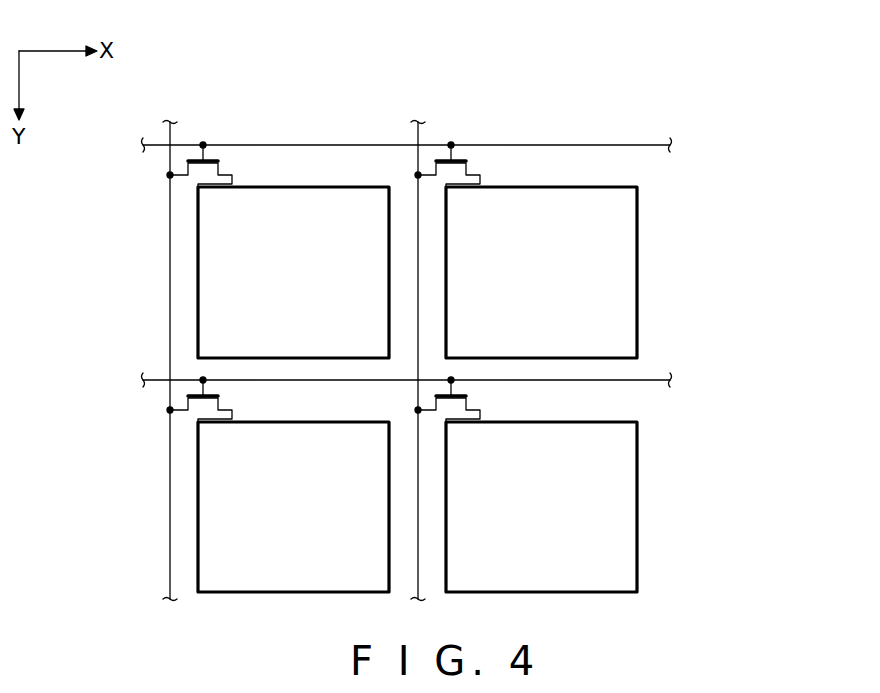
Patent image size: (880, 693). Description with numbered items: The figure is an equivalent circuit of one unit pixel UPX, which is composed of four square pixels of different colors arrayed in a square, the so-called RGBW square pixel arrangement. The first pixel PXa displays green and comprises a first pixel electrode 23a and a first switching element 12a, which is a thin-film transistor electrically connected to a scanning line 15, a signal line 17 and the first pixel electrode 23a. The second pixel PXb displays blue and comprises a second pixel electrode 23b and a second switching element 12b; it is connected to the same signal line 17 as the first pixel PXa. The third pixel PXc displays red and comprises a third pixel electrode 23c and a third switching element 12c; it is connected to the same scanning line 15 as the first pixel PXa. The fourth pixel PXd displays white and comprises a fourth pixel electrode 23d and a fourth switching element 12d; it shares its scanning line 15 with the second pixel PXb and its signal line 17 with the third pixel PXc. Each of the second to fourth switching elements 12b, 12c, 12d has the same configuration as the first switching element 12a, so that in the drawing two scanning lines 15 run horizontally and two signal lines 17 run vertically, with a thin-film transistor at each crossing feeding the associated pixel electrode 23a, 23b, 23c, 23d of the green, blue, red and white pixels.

The scanning line 15 is at (148, 143).
The signal line 17 is at (171, 133).
The first switching element 12a is at (182, 189).
The second switching element 12b is at (182, 424).
The third switching element 12c is at (494, 168).
The fourth switching element 12d is at (494, 403).
The first pixel electrode 23a is at (198, 287).
The second pixel electrode 23b is at (198, 522).
The third pixel electrode 23c is at (637, 258).
The fourth pixel electrode 23d is at (637, 489).
The unit pixel UPX is at (662, 133).
The first pixel PXa is at (100, 192).
The second pixel PXb is at (100, 427).
The third pixel PXc is at (727, 153).
The fourth pixel PXd is at (727, 383).